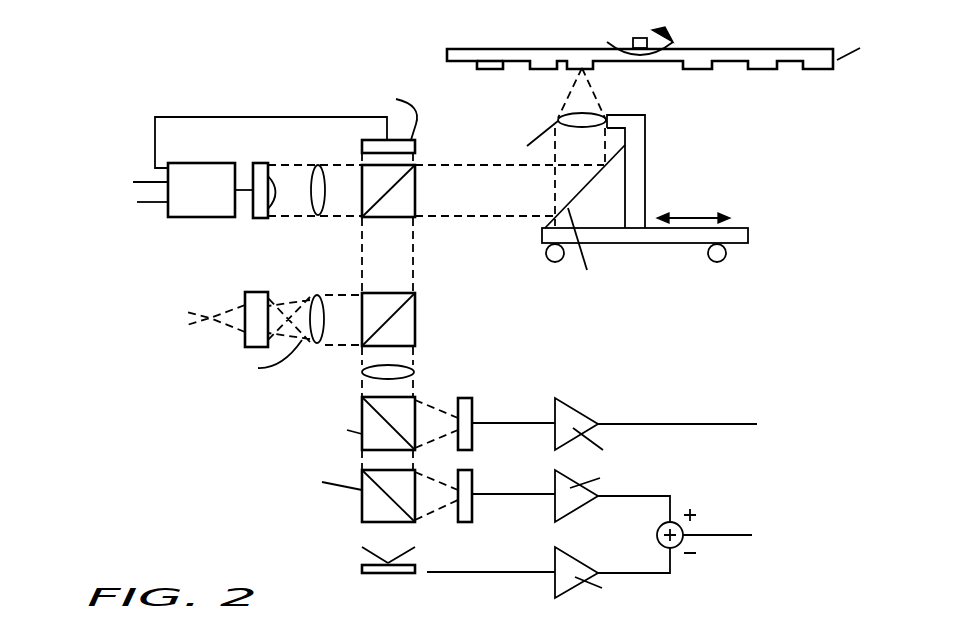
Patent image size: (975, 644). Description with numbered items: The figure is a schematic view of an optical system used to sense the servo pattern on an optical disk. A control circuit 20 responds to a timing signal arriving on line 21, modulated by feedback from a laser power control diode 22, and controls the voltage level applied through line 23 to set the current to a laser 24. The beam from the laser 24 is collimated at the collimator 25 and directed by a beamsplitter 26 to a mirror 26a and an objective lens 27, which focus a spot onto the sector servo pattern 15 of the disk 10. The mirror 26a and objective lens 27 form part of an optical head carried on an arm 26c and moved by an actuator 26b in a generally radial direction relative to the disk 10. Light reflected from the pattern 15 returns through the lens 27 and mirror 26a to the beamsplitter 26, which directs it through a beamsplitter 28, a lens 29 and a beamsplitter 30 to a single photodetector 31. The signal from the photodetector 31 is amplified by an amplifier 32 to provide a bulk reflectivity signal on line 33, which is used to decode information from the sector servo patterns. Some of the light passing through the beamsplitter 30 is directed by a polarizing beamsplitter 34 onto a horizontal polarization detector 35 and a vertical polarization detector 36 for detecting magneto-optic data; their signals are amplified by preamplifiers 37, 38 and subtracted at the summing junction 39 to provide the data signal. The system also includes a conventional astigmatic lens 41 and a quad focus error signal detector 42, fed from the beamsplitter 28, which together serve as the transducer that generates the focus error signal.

The disk 10 is at (447, 55).
The sector servo pattern 15 is at (487, 69).
The control circuit 20 is at (197, 217).
The line 21 is at (138, 203).
The laser power control diode 22 is at (362, 143).
The line 23 is at (137, 182).
The laser 24 is at (273, 197).
The collimator 25 is at (312, 166).
The beamsplitter 26 is at (417, 213).
The mirror 26a is at (593, 181).
The actuator 26b is at (750, 227).
The actuator arm 26c is at (646, 142).
The objective lens 27 is at (606, 117).
The beamsplitter 28 is at (416, 339).
The lens 29 is at (362, 368).
The beamsplitter 30 is at (362, 400).
The single photodetector 31 is at (472, 446).
The amplifier 32 is at (580, 410).
The line 33 is at (655, 423).
The polarizing beamsplitter 34 is at (362, 512).
The horizontal polarization detector 35 is at (472, 517).
The vertical polarization detector 36 is at (362, 568).
The amplifier 37 is at (572, 514).
The amplifier 38 is at (577, 557).
The subtractor 39 is at (700, 527).
The astigmatic lens 41 is at (322, 297).
The quad focus error signal detector 42 is at (261, 281).